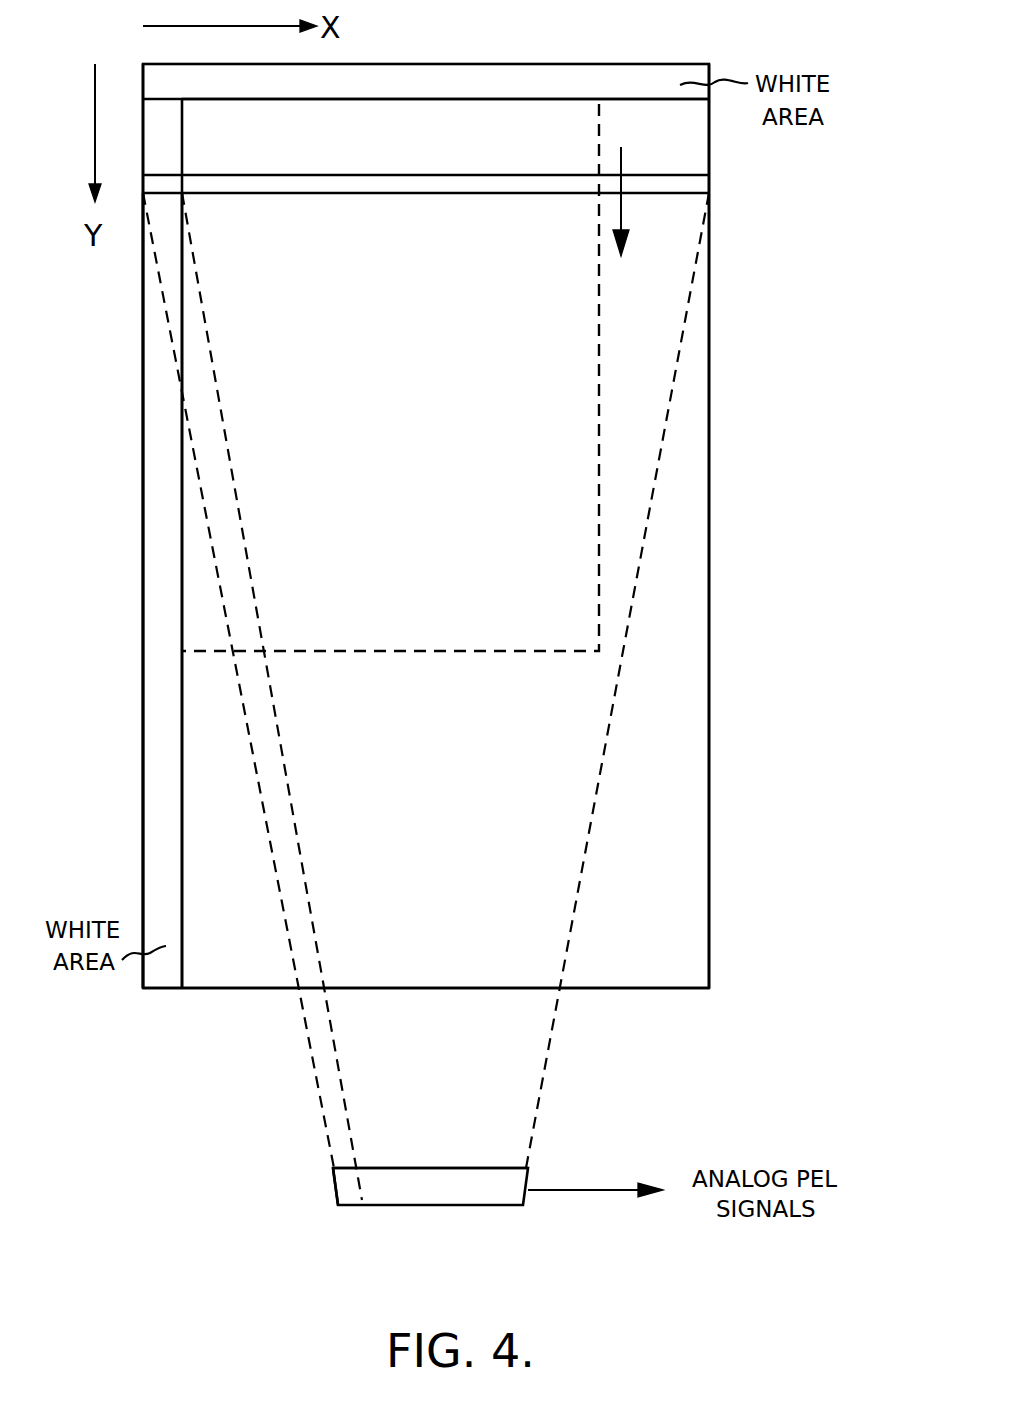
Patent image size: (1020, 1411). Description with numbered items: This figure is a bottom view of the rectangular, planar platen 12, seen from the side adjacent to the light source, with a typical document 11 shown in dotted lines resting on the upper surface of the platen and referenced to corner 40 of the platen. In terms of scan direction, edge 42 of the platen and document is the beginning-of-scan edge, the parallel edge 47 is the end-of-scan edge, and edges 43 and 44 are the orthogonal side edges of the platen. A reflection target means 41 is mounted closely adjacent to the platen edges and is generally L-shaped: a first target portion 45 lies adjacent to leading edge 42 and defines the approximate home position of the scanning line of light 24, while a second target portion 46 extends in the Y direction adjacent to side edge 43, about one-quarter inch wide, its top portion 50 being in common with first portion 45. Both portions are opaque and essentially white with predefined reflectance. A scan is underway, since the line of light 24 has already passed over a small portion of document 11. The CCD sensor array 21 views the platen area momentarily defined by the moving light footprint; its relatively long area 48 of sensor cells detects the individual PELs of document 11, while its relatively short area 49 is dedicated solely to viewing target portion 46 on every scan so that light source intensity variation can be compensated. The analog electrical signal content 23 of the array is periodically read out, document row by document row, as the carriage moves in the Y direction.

The top portion 50 is at (163, 77).
The first target portion 45 is at (573, 79).
The corner 40 is at (183, 103).
The leading platen edge 42 is at (483, 103).
The scanning line of light 24 is at (437, 187).
The document 11 is at (440, 652).
The reflection target means 41 is at (132, 487).
The side edge 43 is at (182, 470).
The platen 12 is at (696, 650).
The second target portion 46 is at (162, 614).
The side edge 44 is at (712, 800).
The end of scan edge 47 is at (458, 989).
The sensor array 21 is at (345, 1222).
The short area of sensor cells 49 is at (333, 1187).
The long area of sensor cells 48 is at (430, 1188).
The analog electrical signal content 23 is at (592, 1191).